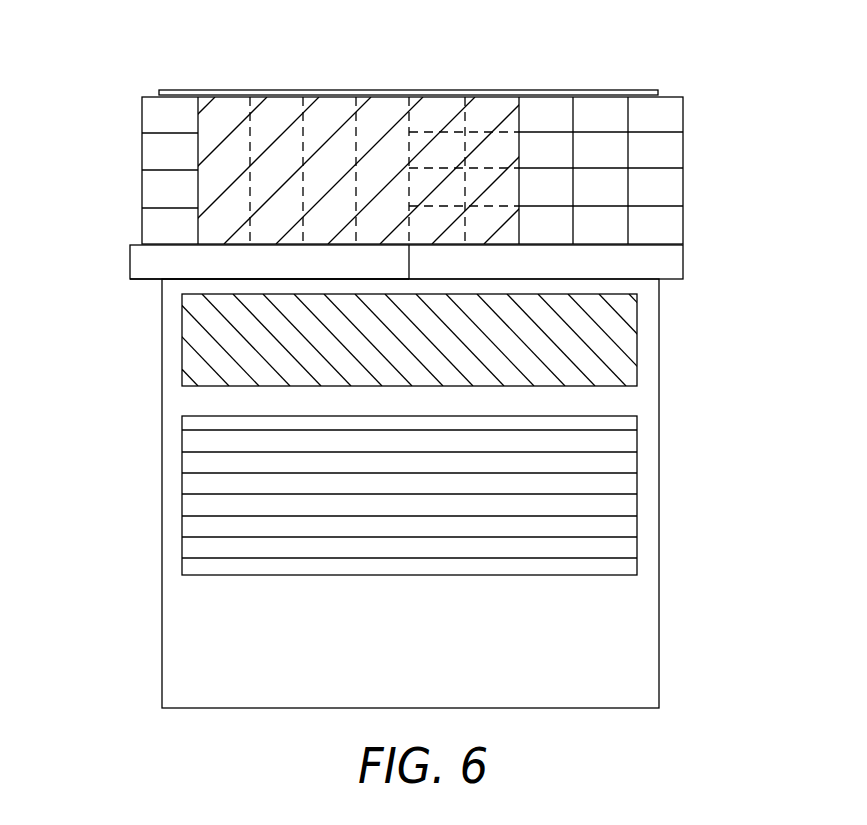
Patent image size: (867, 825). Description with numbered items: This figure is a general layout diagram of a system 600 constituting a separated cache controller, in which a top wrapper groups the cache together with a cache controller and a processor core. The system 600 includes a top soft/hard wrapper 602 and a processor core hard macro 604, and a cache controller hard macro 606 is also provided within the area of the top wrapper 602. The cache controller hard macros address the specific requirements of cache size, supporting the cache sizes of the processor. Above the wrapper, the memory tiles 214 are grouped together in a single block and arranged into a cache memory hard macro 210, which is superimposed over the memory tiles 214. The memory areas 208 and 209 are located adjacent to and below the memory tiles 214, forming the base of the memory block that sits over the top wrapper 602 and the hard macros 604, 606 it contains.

The system 600 is at (672, 50).
The cache memory hard macro 210 is at (313, 128).
The memory tiles 214 is at (683, 147).
The memory section 208 is at (668, 260).
The memory section 209 is at (157, 258).
The cache controller hard macro 606 is at (609, 348).
The processor core hard macro 604 is at (609, 483).
The top soft/hard wrapper 602 is at (588, 633).